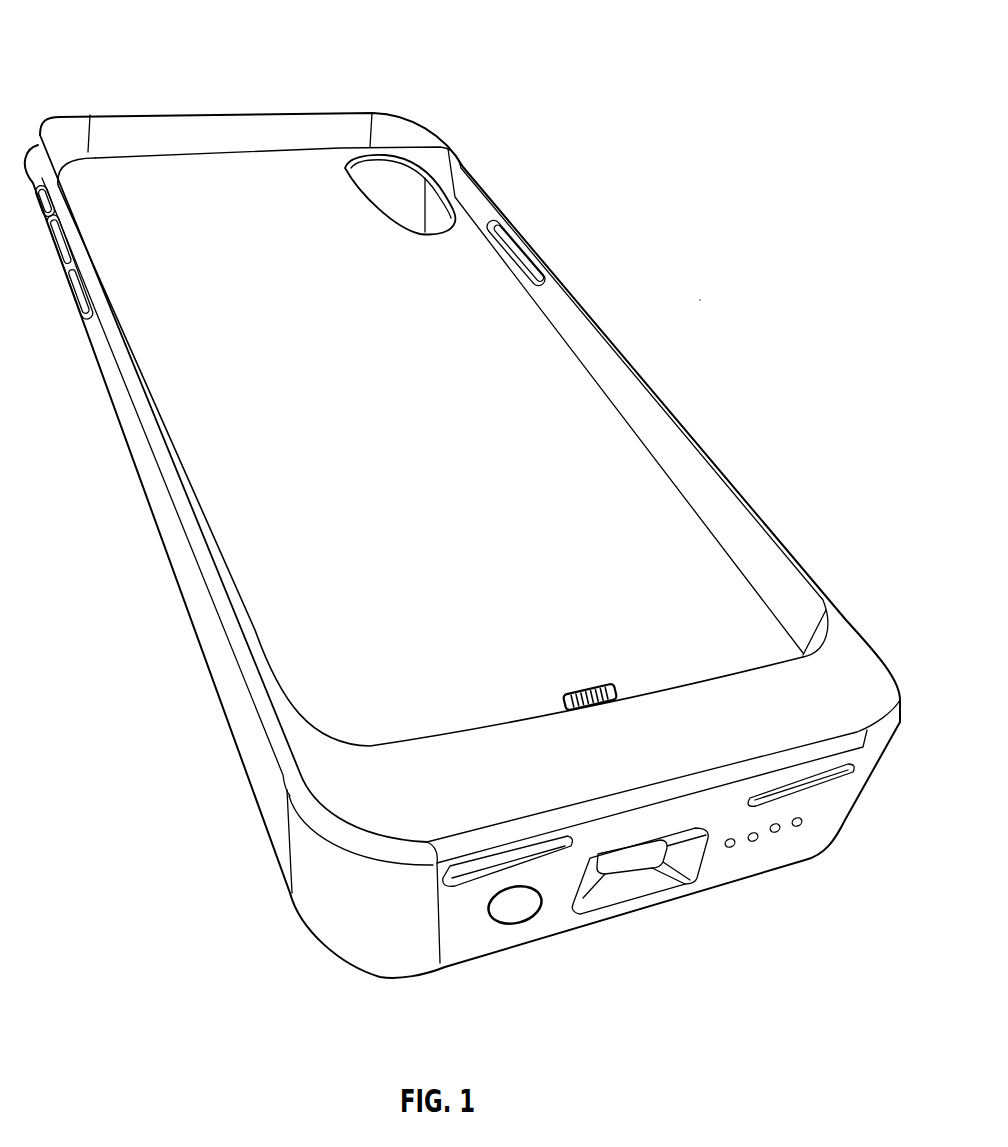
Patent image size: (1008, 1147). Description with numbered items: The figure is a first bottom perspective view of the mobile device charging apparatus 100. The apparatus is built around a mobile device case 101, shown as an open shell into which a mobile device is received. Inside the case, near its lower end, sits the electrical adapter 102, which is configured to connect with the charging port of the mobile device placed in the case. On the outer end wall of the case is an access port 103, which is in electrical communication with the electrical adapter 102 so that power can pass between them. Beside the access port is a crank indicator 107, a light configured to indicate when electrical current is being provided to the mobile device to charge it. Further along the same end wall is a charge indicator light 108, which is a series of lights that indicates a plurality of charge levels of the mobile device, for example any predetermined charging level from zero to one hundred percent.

The mobile device charging apparatus 100 is at (116, 45).
The mobile device case 101 is at (681, 309).
The electrical adapter 102 is at (603, 683).
The access port 103 is at (622, 865).
The crank indicator 107 is at (513, 907).
The charge indicator light 108 is at (752, 846).